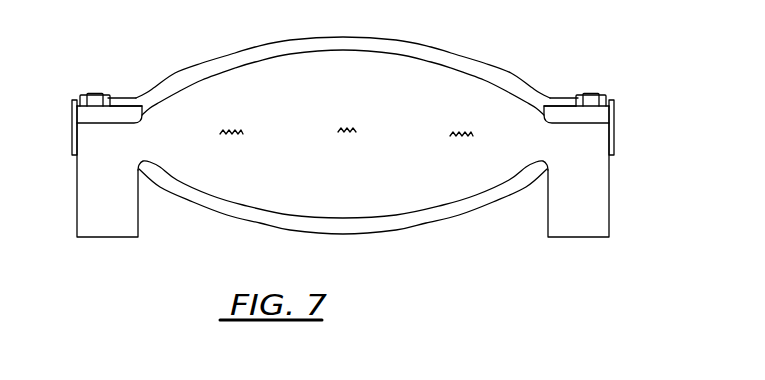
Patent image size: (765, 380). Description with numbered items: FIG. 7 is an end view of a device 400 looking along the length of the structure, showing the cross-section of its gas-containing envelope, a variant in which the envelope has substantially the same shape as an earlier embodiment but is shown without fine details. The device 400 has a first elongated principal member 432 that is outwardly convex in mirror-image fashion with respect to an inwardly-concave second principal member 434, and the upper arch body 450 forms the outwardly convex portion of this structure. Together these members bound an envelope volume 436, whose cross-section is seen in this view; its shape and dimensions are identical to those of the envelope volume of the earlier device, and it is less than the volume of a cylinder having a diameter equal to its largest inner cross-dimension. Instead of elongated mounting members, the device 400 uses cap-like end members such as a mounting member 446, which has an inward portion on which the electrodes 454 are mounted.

The device 400 is at (560, 52).
The first elongated principal member 432 is at (377, 52).
The mounting member 446 is at (333, 37).
The upper arch body 450 is at (278, 82).
The second principal member 434 is at (480, 190).
The envelope volume 436 is at (265, 185).
The electrodes 454 is at (233, 129).